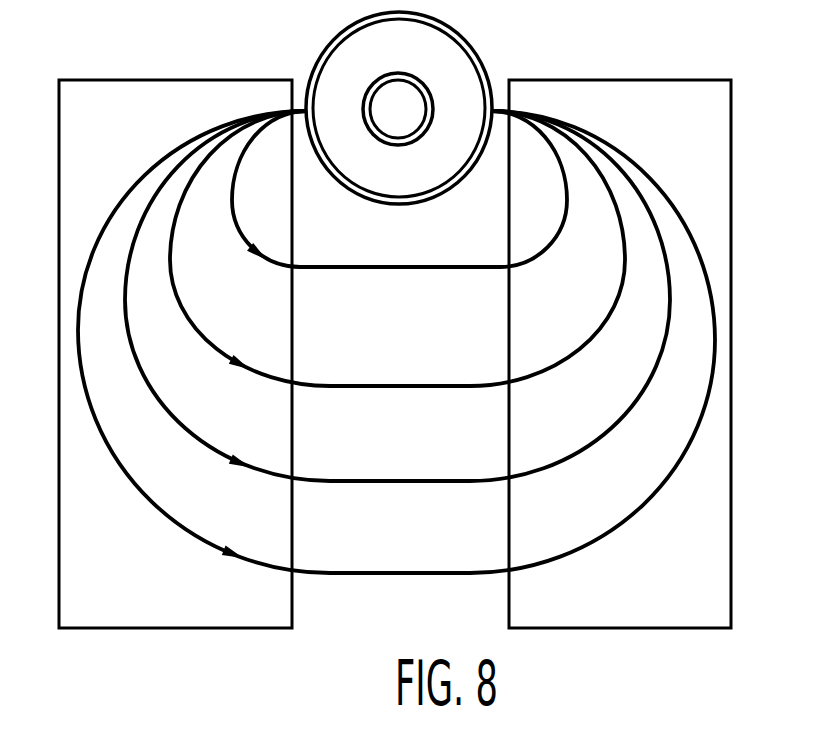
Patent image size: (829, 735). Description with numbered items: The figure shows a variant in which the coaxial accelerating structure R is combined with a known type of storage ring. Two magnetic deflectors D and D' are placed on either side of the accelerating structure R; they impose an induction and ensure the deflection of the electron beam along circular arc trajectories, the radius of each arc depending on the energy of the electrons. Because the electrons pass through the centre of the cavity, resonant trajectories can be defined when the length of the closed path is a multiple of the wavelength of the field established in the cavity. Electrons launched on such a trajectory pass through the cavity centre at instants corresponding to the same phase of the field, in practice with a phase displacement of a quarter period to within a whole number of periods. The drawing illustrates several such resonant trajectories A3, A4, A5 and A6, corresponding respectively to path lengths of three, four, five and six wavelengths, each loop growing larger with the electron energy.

The coaxial accelerating structure R is at (474, 40).
The magnetic deflector D is at (152, 387).
The magnetic deflector D' is at (641, 388).
The resonant trajectory for h equal to three A3 is at (362, 270).
The resonant trajectory for h equal to four A4 is at (362, 390).
The resonant trajectory for h equal to five A5 is at (362, 485).
The resonant trajectory for h equal to six A6 is at (352, 578).